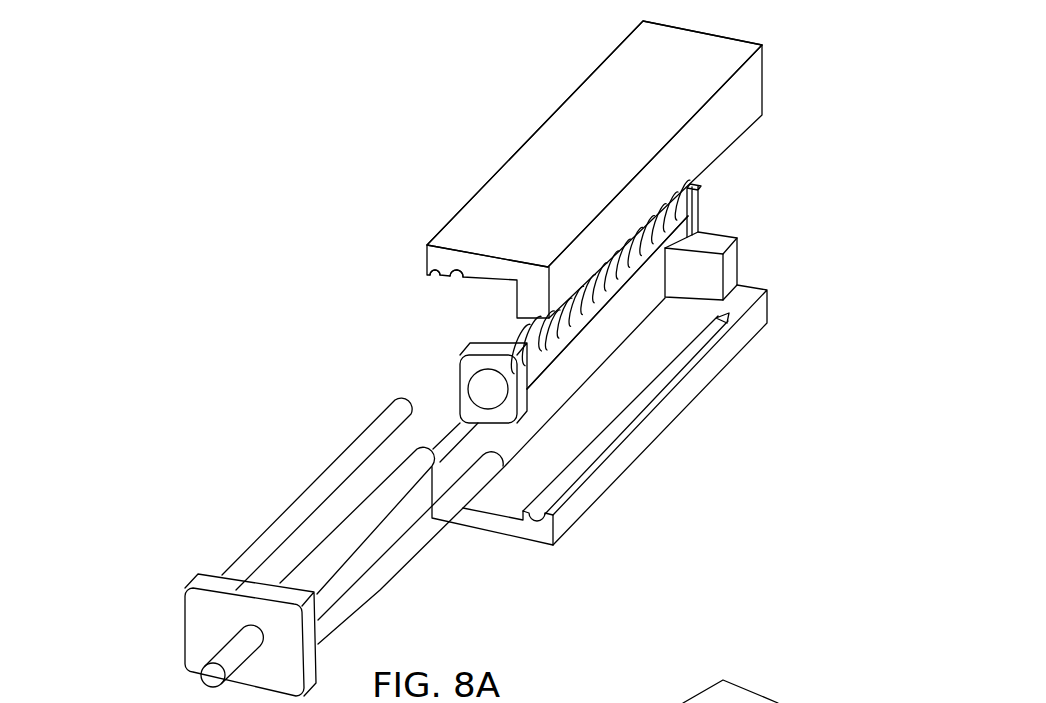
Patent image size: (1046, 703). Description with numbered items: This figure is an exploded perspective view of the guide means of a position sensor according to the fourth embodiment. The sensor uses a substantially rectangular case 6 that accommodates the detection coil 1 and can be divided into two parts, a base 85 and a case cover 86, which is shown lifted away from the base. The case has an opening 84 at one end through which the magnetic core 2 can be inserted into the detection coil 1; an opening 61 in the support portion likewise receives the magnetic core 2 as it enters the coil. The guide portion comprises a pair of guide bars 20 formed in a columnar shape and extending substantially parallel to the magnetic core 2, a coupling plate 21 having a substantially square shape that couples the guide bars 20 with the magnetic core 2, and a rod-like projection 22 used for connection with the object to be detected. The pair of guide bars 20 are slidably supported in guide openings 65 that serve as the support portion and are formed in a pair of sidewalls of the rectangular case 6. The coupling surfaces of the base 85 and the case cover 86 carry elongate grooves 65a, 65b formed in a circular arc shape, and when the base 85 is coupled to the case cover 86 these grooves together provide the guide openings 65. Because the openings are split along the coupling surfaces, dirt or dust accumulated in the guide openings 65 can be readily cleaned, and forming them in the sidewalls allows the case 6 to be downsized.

The detection coil 1 is at (668, 253).
The magnetic core 2 is at (330, 552).
The case 6 is at (568, 97).
The guide bars 20 is at (437, 518).
The coupling plate 21 is at (205, 612).
The rod-like projection 22 is at (201, 674).
The opening 61 is at (492, 389).
The guide openings 65 is at (430, 268).
The elongate groove 65a is at (653, 388).
The elongate groove 65b is at (467, 443).
The opening 84 is at (500, 492).
The base 85 is at (707, 375).
The case cover 86 is at (535, 173).